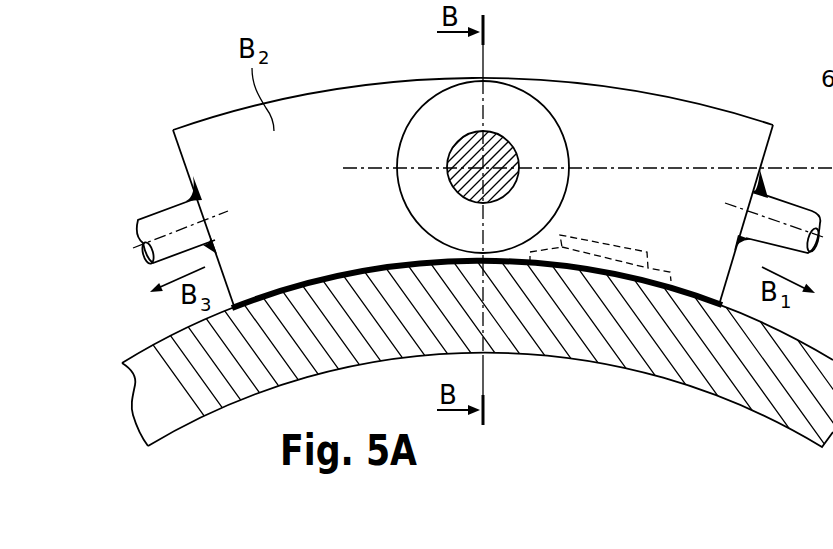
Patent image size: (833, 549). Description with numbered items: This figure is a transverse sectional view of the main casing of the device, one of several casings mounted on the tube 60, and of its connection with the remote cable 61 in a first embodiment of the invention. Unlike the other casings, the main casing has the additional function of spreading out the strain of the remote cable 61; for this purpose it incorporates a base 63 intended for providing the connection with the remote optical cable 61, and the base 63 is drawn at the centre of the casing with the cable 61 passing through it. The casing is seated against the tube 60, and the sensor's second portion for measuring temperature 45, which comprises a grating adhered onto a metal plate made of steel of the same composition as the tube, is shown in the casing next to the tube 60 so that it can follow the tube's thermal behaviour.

The second portion for measuring temperature 45 is at (595, 234).
The tube 60 is at (706, 362).
The remote cable 61 is at (441, 126).
The base 63 is at (560, 104).